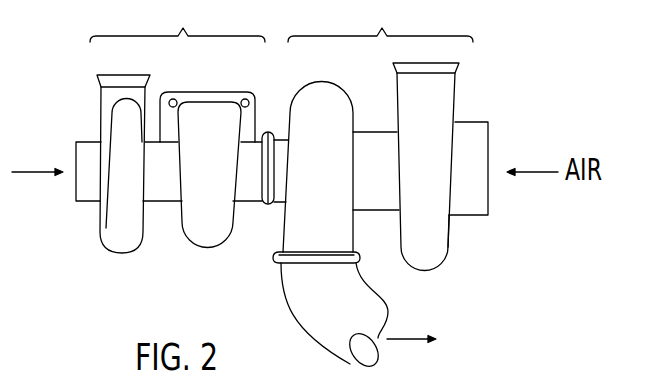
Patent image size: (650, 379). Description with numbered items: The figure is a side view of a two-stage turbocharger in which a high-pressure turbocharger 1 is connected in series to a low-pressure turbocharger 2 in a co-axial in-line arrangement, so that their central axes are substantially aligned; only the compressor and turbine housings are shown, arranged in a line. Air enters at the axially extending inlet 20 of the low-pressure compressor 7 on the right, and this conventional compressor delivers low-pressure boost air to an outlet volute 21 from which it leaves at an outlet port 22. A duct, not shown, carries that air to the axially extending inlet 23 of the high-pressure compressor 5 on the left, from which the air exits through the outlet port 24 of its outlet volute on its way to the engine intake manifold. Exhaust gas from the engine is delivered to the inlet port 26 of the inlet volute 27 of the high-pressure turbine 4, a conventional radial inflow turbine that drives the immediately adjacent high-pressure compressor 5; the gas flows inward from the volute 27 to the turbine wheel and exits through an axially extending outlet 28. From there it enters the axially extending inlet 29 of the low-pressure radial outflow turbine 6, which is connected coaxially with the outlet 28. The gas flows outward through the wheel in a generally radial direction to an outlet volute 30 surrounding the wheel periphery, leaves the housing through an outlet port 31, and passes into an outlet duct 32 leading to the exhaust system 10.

The high-pressure turbocharger 1 is at (177, 21).
The low-pressure turbocharger 2 is at (380, 21).
The high-pressure turbine 4 is at (203, 253).
The high-pressure compressor 5 is at (120, 253).
The low-pressure radial outflow turbine 6 is at (340, 82).
The low-pressure compressor 7 is at (453, 227).
The exhaust system 10 is at (428, 338).
The axially extending inlet 20 is at (487, 216).
The outlet volute 21 is at (445, 107).
The outlet port 22 is at (455, 68).
The inlet 23 is at (92, 192).
The outlet port 24 is at (110, 78).
The inlet port 26 is at (207, 92).
The inlet volute 27 is at (190, 112).
The axially extending outlet 28 is at (248, 190).
The axially extending inlet 29 is at (281, 143).
The outlet volute 30 is at (338, 227).
The outlet port 31 is at (360, 255).
The outlet duct 32 is at (317, 332).